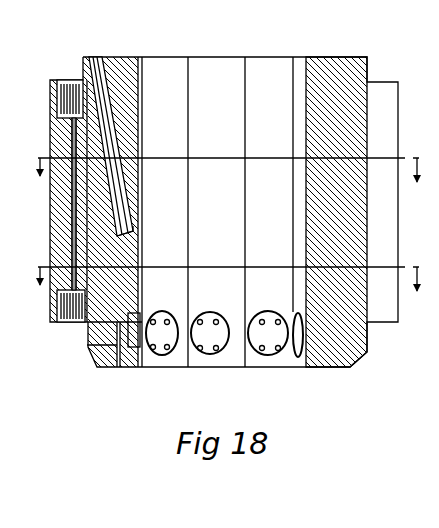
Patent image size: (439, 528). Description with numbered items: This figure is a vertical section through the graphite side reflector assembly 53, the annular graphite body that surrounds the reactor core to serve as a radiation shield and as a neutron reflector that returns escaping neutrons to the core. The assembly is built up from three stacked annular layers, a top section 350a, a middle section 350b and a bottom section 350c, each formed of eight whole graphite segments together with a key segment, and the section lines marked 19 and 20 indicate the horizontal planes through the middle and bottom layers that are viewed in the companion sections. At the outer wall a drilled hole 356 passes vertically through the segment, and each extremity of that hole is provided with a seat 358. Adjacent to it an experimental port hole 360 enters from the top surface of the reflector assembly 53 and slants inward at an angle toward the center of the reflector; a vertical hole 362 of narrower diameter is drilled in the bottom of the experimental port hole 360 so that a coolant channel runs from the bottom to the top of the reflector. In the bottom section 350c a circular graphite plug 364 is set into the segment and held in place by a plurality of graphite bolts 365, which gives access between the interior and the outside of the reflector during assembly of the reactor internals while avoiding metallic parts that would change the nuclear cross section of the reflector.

The graphite side reflector assembly 53 is at (352, 374).
The drilled hole 356 is at (73, 118).
The seat 358 is at (53, 86).
The experimental port hole 360 is at (110, 212).
The vertical hole 362 is at (97, 367).
The circular graphite plug 364 is at (108, 303).
The graphite bolts 365 is at (216, 350).
The top section 350a is at (238, 117).
The middle section 350b is at (238, 222).
The bottom section 350c is at (238, 300).
The section line 19 is at (231, 183).
The section line 20 is at (229, 290).